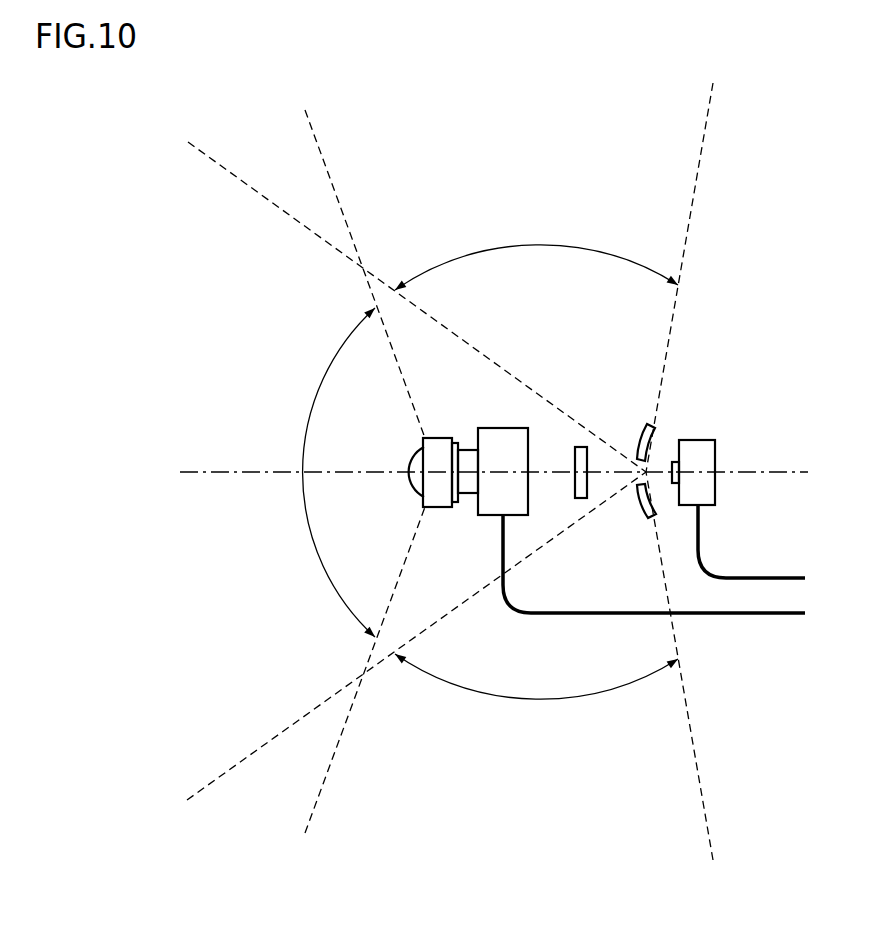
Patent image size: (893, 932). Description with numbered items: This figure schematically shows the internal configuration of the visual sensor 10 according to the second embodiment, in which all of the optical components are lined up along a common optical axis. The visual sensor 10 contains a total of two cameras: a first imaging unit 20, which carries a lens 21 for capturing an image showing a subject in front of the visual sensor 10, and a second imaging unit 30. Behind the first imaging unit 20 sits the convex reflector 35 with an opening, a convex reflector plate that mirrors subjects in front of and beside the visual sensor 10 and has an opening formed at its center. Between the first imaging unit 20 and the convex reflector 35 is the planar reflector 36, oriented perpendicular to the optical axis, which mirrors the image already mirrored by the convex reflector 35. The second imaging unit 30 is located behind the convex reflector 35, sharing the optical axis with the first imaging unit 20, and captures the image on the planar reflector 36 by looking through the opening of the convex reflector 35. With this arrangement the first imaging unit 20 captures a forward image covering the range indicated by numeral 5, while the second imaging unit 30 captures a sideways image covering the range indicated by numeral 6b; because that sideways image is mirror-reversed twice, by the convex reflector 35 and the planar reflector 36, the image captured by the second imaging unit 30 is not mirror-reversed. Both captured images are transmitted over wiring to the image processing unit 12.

The visual sensor 10 is at (535, 818).
The image processing unit 12 is at (670, 567).
The first imaging unit 20 is at (500, 428).
The lens 21 is at (433, 438).
The second imaging unit 30 is at (716, 452).
The convex reflector with an opening 35 is at (647, 498).
The planar reflector 36 is at (573, 448).
The range 5 is at (336, 472).
The range 6b is at (536, 473).